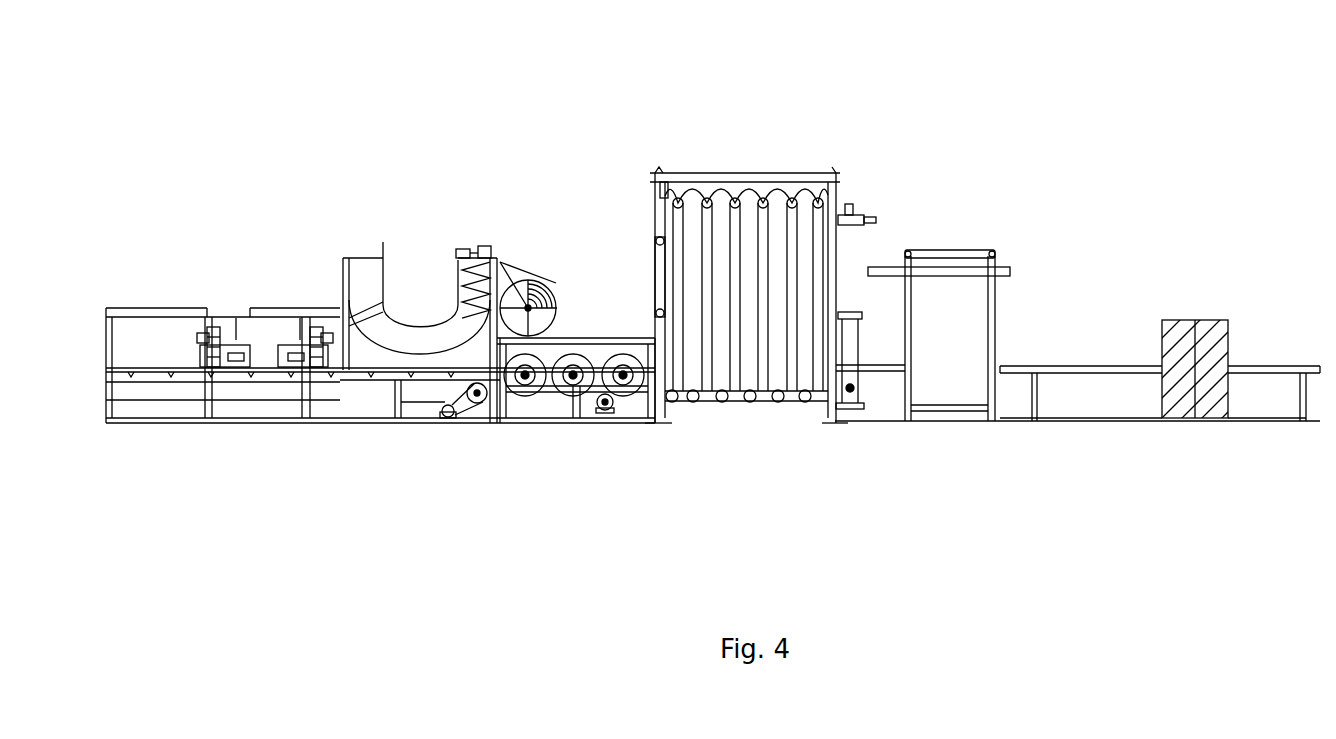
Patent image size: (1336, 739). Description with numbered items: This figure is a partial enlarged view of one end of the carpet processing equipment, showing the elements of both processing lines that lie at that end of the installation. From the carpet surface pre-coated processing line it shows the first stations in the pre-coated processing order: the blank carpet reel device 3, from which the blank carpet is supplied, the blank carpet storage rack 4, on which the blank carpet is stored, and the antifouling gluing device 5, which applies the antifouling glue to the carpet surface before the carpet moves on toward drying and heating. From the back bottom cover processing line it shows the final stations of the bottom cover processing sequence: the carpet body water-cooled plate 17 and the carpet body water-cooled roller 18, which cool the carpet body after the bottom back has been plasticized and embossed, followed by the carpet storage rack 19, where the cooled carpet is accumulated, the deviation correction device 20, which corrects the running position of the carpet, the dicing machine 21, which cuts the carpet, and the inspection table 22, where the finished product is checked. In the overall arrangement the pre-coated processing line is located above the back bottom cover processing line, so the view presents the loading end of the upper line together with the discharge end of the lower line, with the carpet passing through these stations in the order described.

The blank carpet reel device 3 is at (541, 272).
The blank carpet storage rack 4 is at (433, 340).
The antifouling gluing device 5 is at (223, 333).
The carpet body water-cooled plate 17 is at (364, 382).
The carpet body water-cooled roller 18 is at (588, 365).
The carpet storage rack 19 is at (738, 177).
The deviation correction device 20 is at (922, 255).
The dicing machine 21 is at (1178, 343).
The inspection table 22 is at (1272, 365).